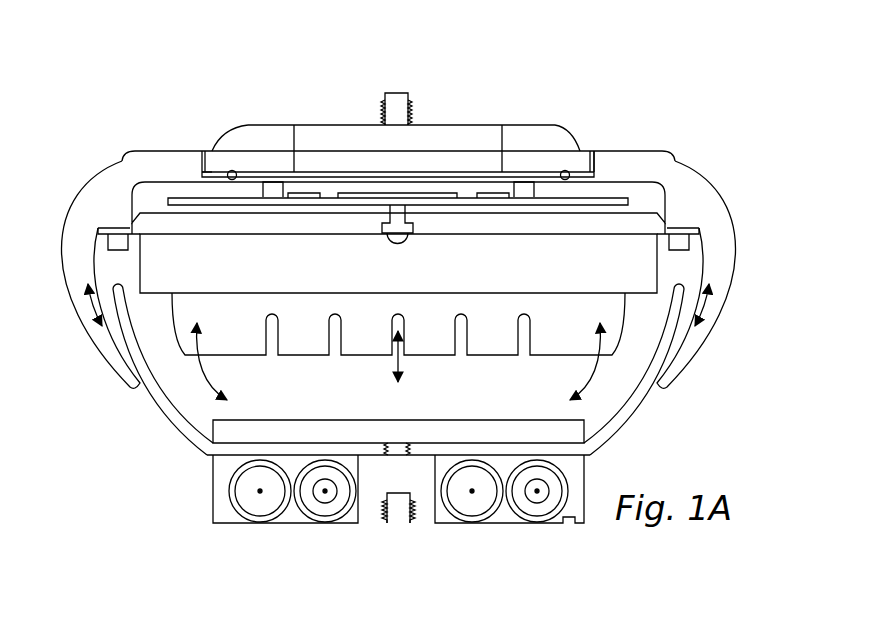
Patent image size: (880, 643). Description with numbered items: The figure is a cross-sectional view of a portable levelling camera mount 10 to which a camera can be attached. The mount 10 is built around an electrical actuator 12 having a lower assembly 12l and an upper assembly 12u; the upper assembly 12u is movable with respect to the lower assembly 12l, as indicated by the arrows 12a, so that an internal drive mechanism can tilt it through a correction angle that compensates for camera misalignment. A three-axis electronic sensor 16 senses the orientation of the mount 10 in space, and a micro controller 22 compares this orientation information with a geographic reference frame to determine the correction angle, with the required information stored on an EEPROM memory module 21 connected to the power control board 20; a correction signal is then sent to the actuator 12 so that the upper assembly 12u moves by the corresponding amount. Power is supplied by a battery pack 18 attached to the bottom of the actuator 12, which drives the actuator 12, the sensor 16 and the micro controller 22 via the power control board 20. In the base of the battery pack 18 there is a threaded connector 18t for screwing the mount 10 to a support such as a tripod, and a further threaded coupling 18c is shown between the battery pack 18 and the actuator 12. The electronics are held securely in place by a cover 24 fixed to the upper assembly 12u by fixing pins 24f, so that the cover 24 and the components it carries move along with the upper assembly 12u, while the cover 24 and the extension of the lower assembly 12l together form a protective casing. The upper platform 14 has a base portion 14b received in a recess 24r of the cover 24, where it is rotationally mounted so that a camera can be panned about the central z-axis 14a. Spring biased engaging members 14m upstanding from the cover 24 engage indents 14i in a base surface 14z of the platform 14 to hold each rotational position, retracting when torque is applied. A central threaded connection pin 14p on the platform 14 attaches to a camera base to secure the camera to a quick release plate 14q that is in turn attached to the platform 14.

The portable levelling camera mount 10 is at (685, 54).
The electrical actuator 12 is at (640, 263).
The arrows indicating movement of upper assembly 12a is at (215, 381).
The lower assembly 12l is at (248, 394).
The upper assembly 12u is at (340, 281).
The upper platform 14 is at (598, 145).
The central z-axis 14a is at (528, 125).
The base portion of the platform 14b is at (600, 167).
The indents 14i is at (568, 172).
The spring biased engaging members 14m is at (230, 170).
The central threaded connection pin 14p is at (398, 100).
The quick release plate 14q is at (275, 128).
The base surface 14z is at (259, 172).
The 3-axis electronic sensor 16 is at (357, 195).
The battery pack 18 is at (323, 525).
The connector threaded coupling 18c is at (399, 452).
The threaded connector 18t is at (397, 517).
The power control board 20 is at (616, 200).
The EEPROM memory module 21 is at (303, 198).
The micro controller 22 is at (488, 193).
The cover 24 is at (85, 208).
The fixing pins 24f is at (118, 240).
The recess 24r is at (203, 173).